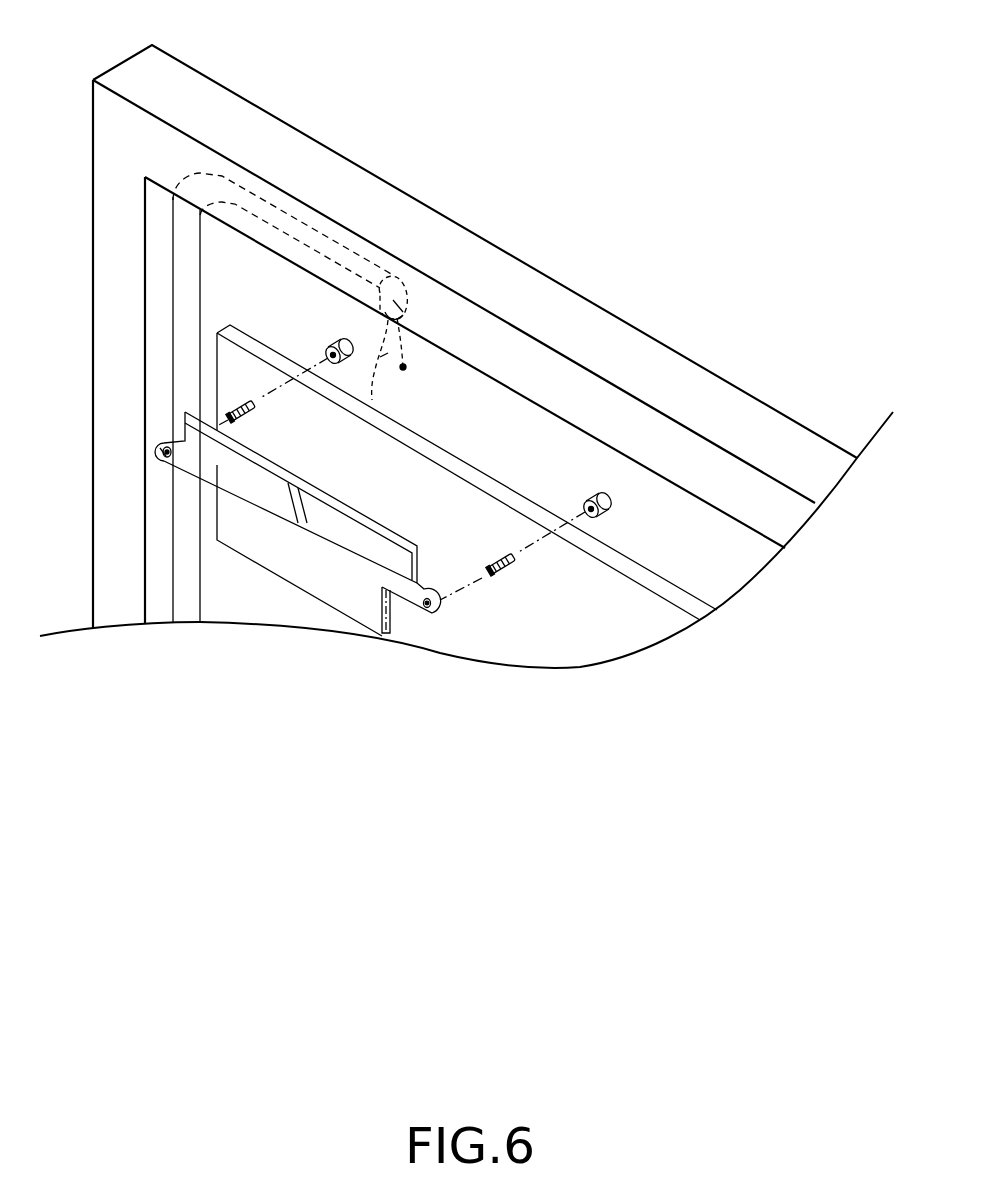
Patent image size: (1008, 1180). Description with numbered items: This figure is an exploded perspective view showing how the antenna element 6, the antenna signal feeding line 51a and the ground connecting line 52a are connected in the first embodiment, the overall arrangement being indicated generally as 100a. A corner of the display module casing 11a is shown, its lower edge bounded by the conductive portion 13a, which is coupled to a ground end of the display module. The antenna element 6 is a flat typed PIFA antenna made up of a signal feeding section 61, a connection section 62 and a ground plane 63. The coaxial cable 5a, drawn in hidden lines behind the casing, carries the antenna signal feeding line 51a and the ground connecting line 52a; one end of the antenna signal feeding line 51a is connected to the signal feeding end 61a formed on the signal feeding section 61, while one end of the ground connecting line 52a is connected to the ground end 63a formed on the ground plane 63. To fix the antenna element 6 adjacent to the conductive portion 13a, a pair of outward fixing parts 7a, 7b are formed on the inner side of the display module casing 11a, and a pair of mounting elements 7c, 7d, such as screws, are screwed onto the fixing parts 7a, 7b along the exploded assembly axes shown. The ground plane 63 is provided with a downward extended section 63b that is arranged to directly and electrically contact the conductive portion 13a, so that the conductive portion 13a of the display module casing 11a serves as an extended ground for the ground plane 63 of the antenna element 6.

The display module casing 11a is at (180, 93).
The conductive portion 13a is at (617, 643).
The display device assembly 100a is at (690, 196).
The coaxial cable 5a is at (247, 207).
The ground connecting line 52a is at (388, 353).
The antenna signal feeding line 51a is at (400, 320).
The signal feeding end 61a is at (406, 367).
The ground end 63a is at (380, 357).
The fixing part 7b is at (337, 342).
The signal feeding section 61 is at (358, 608).
The connection section 62 is at (297, 523).
The ground plane 63 is at (375, 590).
The downward extended section 63b is at (370, 638).
The mounting element 7d is at (160, 455).
The fixing part 7a is at (612, 505).
The mounting element 7c is at (493, 572).
The antenna element 6 is at (403, 617).